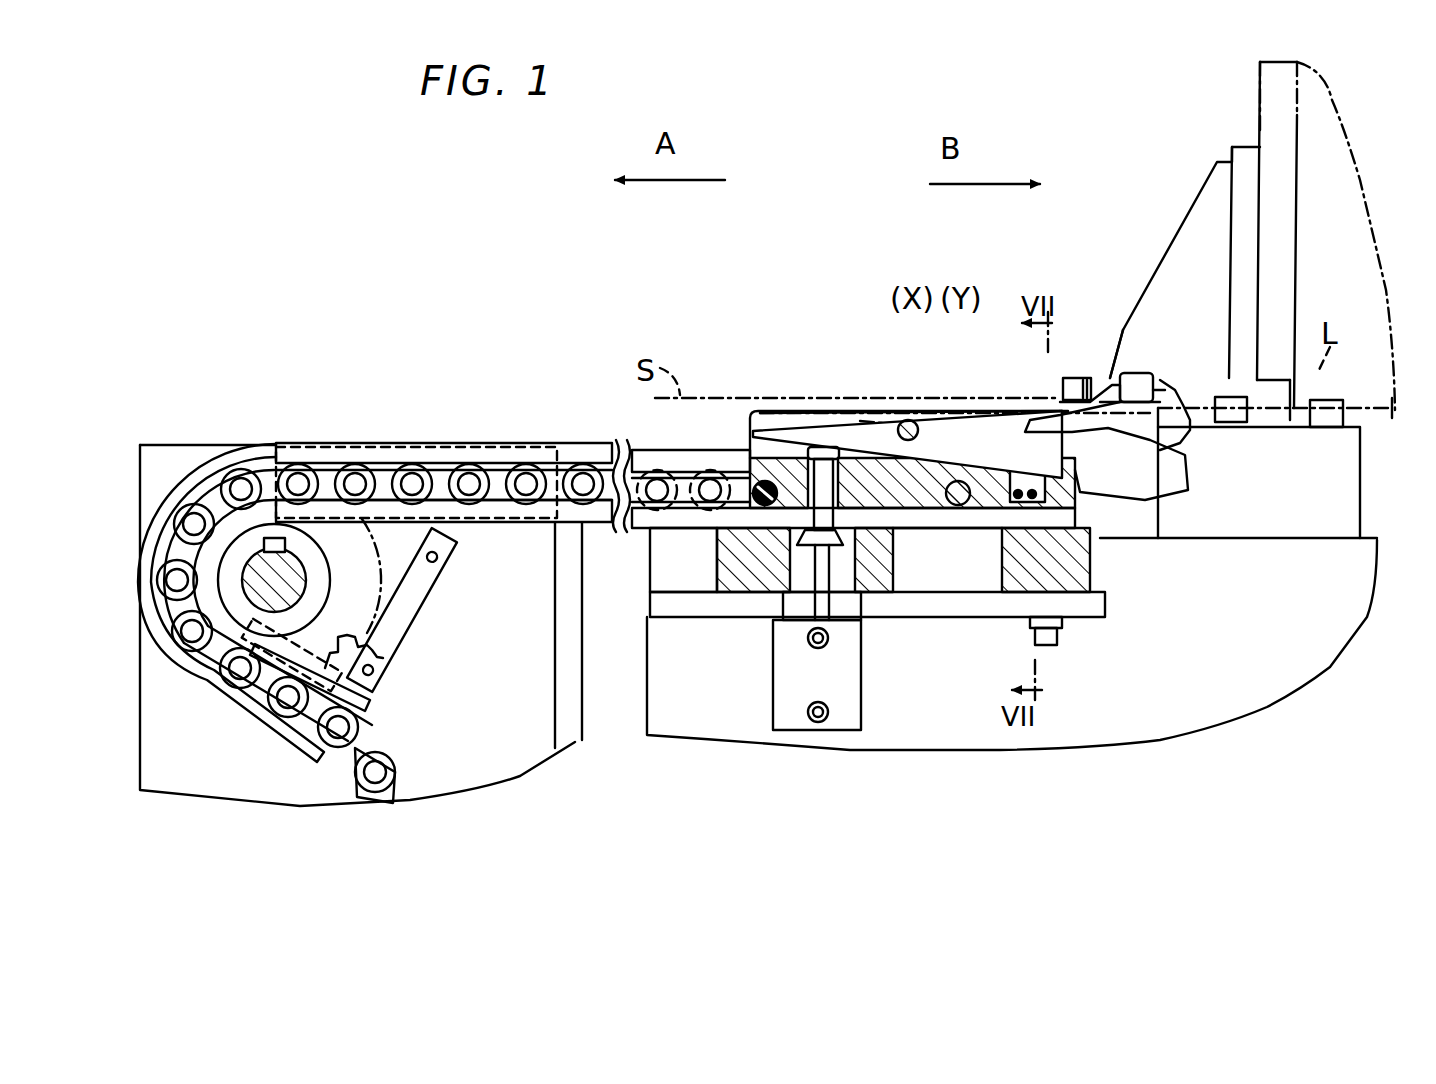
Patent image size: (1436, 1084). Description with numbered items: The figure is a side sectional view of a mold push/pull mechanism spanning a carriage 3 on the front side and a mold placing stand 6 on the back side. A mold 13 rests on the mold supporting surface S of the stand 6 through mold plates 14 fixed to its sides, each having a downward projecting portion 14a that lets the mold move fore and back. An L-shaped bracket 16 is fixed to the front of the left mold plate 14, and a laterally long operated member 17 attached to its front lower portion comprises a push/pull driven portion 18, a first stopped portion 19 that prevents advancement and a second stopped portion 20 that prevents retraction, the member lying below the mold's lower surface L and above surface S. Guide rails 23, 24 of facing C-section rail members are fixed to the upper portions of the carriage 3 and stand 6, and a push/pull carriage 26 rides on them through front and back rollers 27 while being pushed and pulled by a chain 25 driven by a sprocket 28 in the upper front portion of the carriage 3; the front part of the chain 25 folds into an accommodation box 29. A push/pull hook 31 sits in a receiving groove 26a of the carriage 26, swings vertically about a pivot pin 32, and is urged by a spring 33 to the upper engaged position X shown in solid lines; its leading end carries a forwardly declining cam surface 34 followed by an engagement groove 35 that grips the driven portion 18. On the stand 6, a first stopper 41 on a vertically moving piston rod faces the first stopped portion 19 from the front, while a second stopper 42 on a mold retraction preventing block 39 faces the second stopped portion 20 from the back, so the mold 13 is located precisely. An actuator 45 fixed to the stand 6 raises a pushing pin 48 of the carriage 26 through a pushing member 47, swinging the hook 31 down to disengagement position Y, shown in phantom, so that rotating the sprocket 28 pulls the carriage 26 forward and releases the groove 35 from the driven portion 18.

The carriage 3 is at (510, 766).
The mold placing stand 6 is at (692, 742).
The mold 13 is at (1260, 88).
The mold plate 14 is at (1256, 138).
The downward projecting portion 14a is at (1270, 420).
The L-shaped bracket 16 is at (1195, 184).
The operated member 17 is at (1127, 330).
The mold push/pull driven portion 18 is at (1138, 372).
The mold advancement preventing stopped portion 19 is at (1128, 372).
The mold retraction preventing stopped portion 20 is at (1170, 388).
The guide rail 23 is at (348, 446).
The guide rail 24 is at (688, 450).
The chain 25 is at (495, 478).
The push/pull carriage 26 is at (930, 522).
The receiving groove 26a is at (905, 478).
The roller 27 is at (758, 502).
The sprocket 28 is at (386, 660).
The accommodation box 29 is at (572, 742).
The push/pull hook 31 is at (936, 408).
The pivot pin 32 is at (906, 422).
The spring 33 is at (1046, 586).
The cam surface 34 is at (1180, 393).
The engagement groove 35 is at (1112, 392).
The mold retraction preventing block 39 is at (1272, 520).
The advancement preventing stopper 41 is at (1065, 390).
The retraction preventing stopper 42 is at (1240, 395).
The actuator 45 is at (800, 735).
The pushing member 47 is at (793, 582).
The pushing pin 48 is at (838, 488).